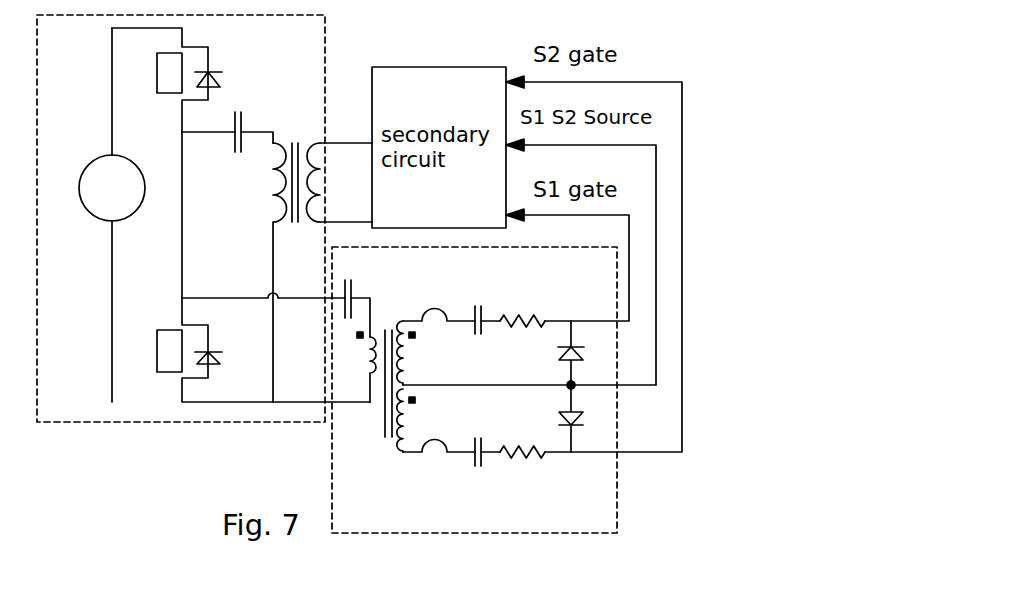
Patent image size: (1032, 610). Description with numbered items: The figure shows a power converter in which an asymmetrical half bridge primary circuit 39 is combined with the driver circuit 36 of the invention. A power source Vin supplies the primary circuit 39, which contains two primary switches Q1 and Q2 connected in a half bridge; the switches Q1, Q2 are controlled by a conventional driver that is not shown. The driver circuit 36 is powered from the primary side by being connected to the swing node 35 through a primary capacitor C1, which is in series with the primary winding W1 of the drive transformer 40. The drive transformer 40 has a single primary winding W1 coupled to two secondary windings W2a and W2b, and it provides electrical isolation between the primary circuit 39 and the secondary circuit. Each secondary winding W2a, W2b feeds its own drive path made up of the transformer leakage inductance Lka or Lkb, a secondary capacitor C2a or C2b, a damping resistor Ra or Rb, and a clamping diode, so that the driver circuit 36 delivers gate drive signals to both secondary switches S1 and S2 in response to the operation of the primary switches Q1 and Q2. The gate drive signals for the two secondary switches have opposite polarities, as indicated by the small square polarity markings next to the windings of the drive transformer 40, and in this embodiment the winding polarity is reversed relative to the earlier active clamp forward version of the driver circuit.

The swing node 35 is at (184, 297).
The driver circuit 36 is at (543, 535).
The asymmetrical half bridge primary circuit 39 is at (236, 422).
The drive transformer 40 is at (401, 396).
The power source Vin is at (112, 188).
The primary switch Q1 is at (189, 73).
The primary switch Q2 is at (189, 351).
The primary capacitor C1 is at (354, 294).
The primary winding W1 is at (357, 367).
The secondary winding W2a is at (412, 358).
The secondary winding W2b is at (412, 423).
The leakage inductance Lka is at (427, 308).
The leakage inductance Lkb is at (433, 452).
The secondary capacitor C2a is at (471, 300).
The secondary capacitor C2b is at (485, 458).
The damping resistor Ra is at (537, 324).
The damping resistor Rb is at (533, 456).